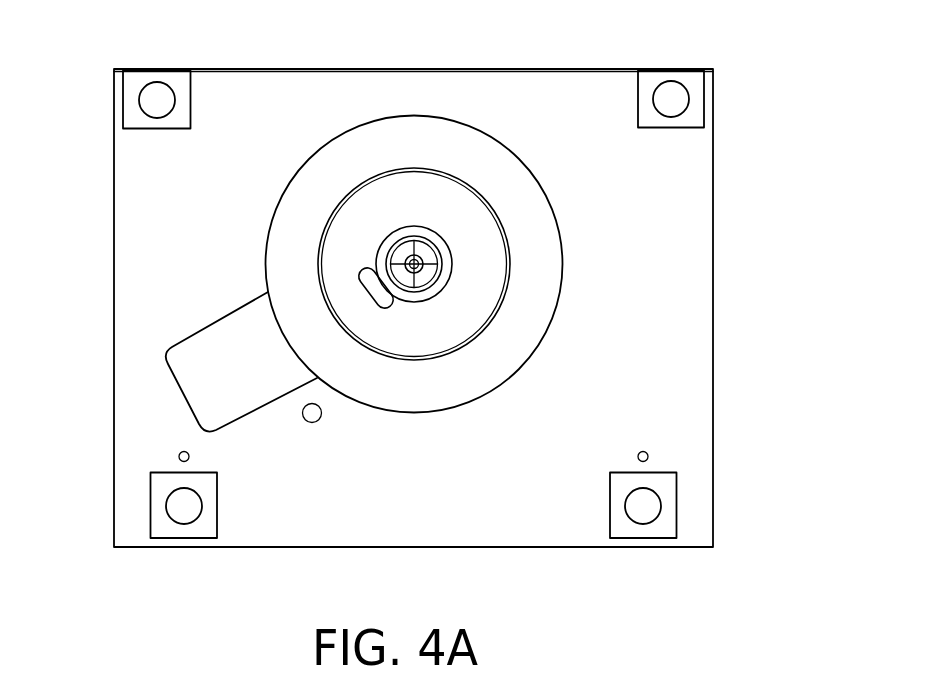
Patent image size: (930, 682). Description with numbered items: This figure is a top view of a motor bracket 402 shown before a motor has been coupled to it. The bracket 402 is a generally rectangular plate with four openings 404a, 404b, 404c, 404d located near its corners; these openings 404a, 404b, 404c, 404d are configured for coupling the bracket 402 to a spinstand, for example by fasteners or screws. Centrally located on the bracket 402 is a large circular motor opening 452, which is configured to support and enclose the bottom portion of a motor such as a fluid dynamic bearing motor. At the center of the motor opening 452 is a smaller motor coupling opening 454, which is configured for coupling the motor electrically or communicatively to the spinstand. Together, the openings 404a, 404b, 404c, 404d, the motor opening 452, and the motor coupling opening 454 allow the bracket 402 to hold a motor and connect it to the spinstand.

The bracket 402 is at (323, 69).
The opening 404a is at (162, 95).
The opening 404b is at (674, 97).
The opening 404c is at (178, 516).
The opening 404d is at (649, 508).
The motor opening 452 is at (483, 285).
The motor coupling opening 454 is at (414, 263).